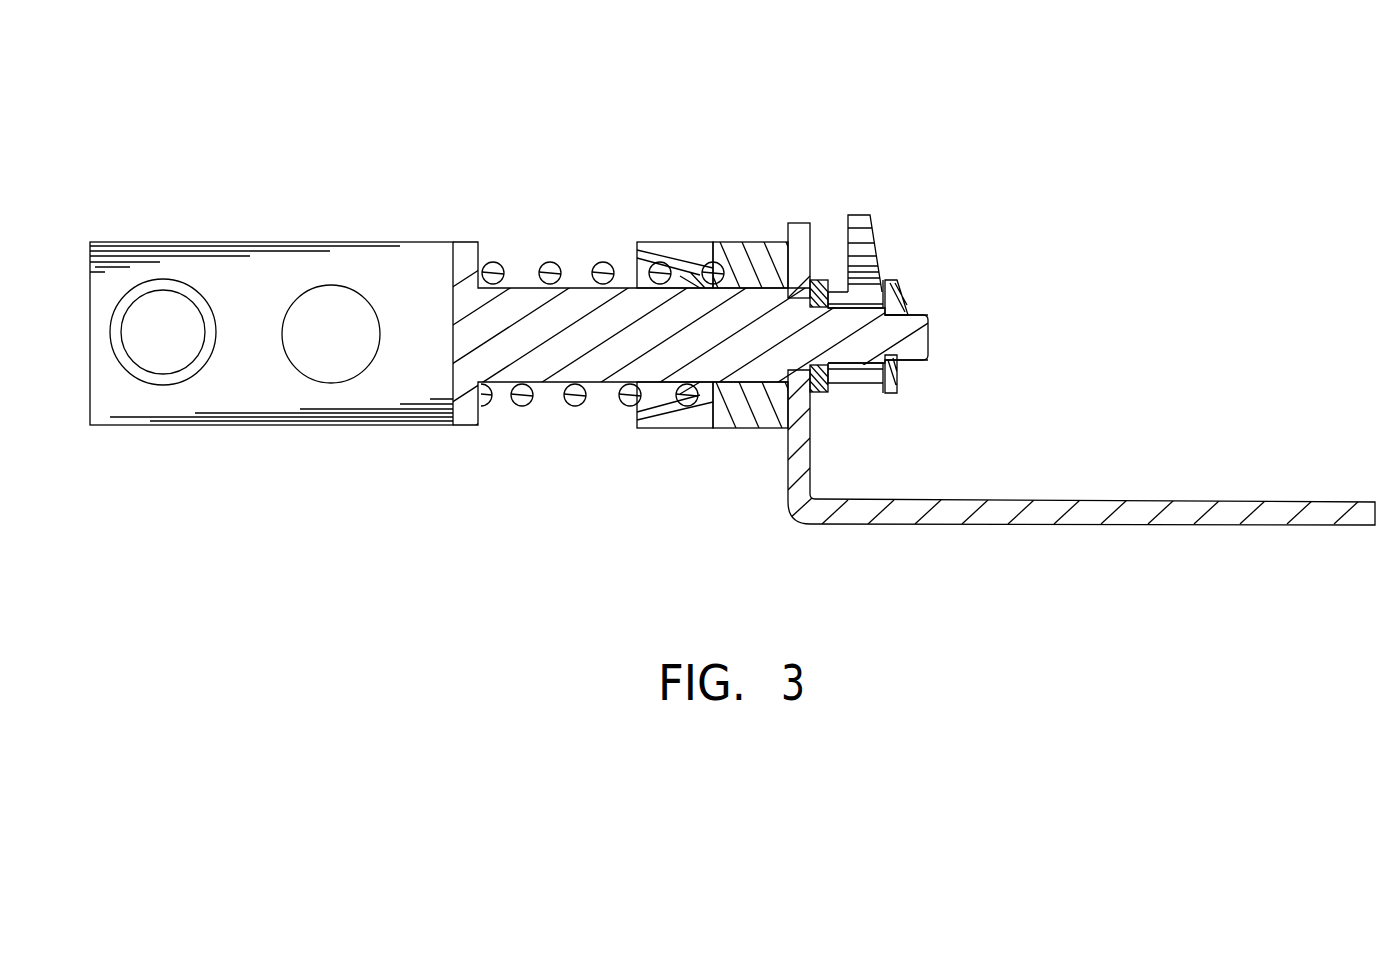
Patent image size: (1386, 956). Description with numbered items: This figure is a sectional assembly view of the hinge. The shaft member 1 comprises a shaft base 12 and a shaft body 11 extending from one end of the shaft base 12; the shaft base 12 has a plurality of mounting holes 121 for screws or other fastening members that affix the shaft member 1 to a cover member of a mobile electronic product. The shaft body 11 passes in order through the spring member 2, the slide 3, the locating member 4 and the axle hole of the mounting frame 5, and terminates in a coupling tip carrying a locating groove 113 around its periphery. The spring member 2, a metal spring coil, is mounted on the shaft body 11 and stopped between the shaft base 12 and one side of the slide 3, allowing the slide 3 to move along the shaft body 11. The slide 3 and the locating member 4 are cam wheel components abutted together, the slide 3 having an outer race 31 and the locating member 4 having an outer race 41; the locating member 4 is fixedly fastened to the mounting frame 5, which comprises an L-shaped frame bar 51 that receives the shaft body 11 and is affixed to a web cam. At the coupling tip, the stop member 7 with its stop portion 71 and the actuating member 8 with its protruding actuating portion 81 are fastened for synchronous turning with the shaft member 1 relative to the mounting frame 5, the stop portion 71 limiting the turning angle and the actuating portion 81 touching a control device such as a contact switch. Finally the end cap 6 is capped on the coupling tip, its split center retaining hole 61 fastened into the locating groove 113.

The shaft member 1 is at (273, 192).
The shaft body 11 is at (600, 368).
The locating groove 113 is at (905, 312).
The shaft base 12 is at (267, 406).
The mounting holes 121 is at (330, 355).
The spring member 2 is at (545, 268).
The slide 3 is at (675, 332).
The outer race 31 is at (670, 242).
The locating member 4 is at (749, 337).
The outer race 41 is at (733, 242).
The mounting frame 5 is at (1081, 374).
The L-shaped frame bar 51 is at (1120, 507).
The end cap 6 is at (951, 363).
The split center retaining hole 61 is at (903, 368).
The stop member 7 is at (838, 311).
The stop portion 71 is at (820, 278).
The actuating member 8 is at (901, 327).
The protruding actuating portion 81 is at (868, 230).